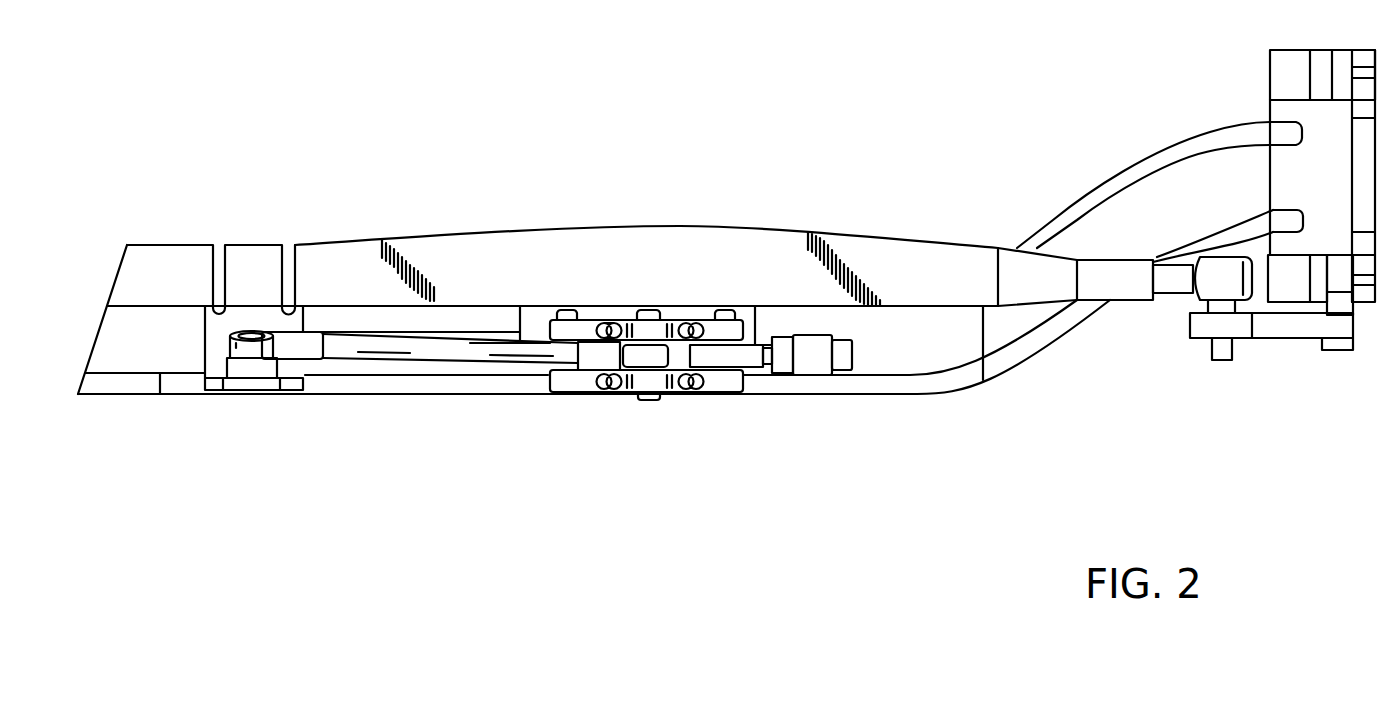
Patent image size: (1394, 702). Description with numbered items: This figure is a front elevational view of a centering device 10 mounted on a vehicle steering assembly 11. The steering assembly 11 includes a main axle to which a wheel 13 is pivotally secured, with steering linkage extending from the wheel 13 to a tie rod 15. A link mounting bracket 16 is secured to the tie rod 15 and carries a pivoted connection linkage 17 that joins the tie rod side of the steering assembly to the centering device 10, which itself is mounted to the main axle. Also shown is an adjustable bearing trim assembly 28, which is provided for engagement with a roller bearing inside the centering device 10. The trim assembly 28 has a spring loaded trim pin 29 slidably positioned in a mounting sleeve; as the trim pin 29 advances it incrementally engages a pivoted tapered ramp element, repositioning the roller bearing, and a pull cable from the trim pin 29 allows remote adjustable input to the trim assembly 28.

The centering device 10 is at (670, 285).
The vehicle steering assembly 11 is at (908, 363).
The wheel 13 is at (1245, 88).
The tie rod 15 is at (1110, 288).
The link mounting bracket 16 is at (213, 360).
The pivoted connection linkage 17 is at (468, 355).
The adjustable bearing trim assembly 28 is at (807, 368).
The spring loaded trim pin 29 is at (640, 308).